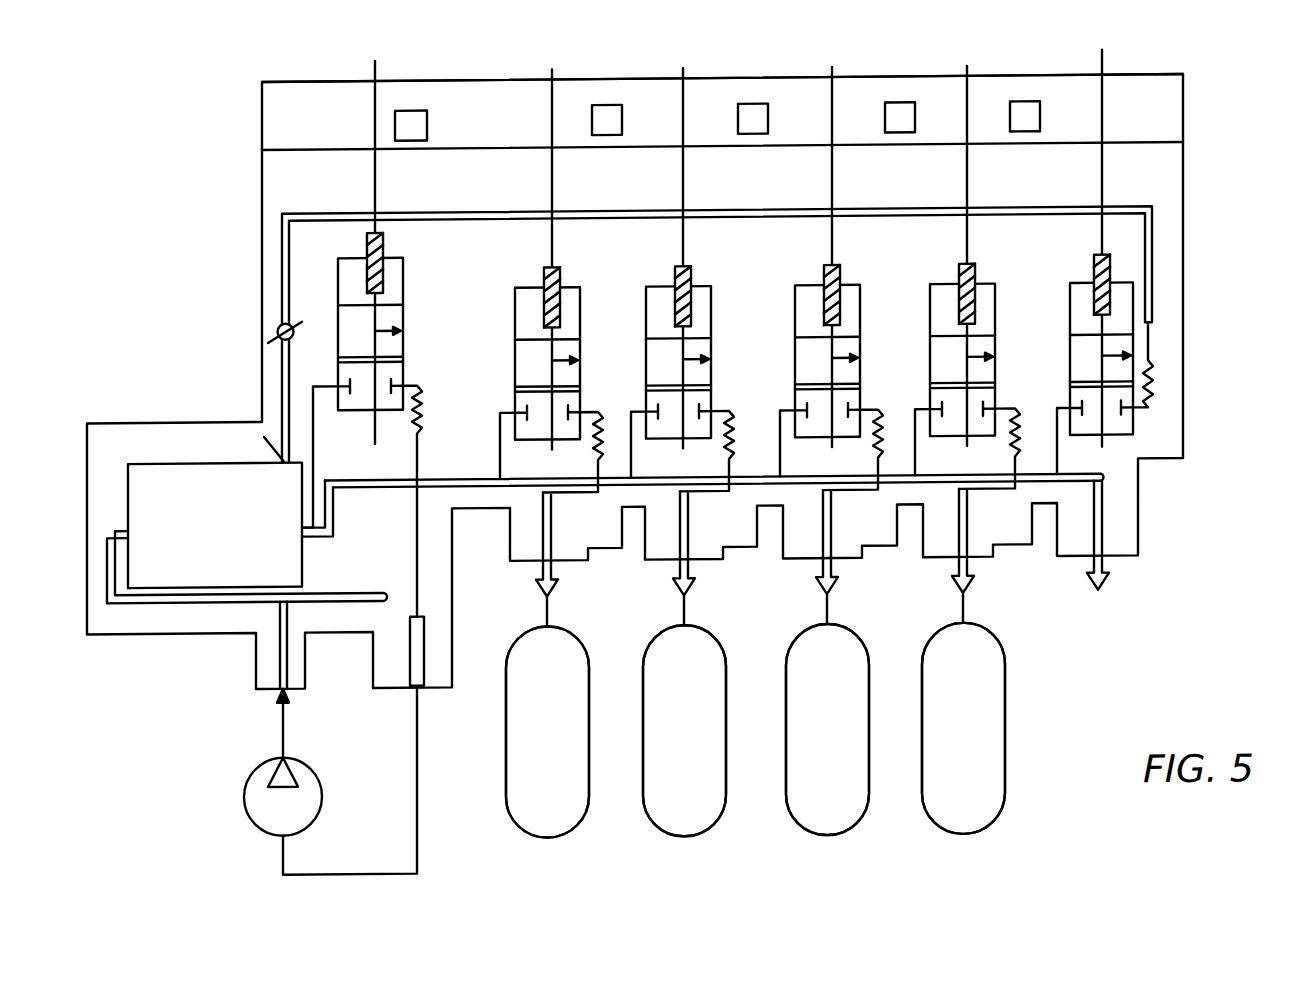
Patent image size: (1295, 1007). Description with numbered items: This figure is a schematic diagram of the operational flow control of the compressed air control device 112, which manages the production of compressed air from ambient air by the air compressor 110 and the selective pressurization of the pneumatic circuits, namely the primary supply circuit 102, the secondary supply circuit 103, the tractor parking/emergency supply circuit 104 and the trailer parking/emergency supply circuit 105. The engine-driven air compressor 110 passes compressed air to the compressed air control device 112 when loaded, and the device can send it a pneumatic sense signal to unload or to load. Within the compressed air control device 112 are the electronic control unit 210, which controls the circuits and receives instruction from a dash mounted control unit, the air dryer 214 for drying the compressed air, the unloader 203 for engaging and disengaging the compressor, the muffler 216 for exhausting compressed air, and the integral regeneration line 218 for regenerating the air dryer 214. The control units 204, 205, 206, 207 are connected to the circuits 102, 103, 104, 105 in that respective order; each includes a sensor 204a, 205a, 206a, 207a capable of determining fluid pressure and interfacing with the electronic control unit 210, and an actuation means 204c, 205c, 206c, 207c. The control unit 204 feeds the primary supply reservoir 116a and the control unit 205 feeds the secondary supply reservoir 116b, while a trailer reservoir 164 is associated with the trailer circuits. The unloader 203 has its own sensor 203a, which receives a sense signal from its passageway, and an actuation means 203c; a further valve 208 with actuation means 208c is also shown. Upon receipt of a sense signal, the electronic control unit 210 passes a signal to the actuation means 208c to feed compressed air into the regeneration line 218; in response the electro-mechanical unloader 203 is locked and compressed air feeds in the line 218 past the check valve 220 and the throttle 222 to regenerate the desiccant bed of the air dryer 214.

The primary supply circuit 102 is at (552, 611).
The secondary supply circuit 103 is at (689, 611).
The tractor parking/emergency supply circuit 104 is at (832, 611).
The trailer parking/emergency supply circuit 105 is at (968, 611).
The air compressor 110 is at (242, 794).
The compressed air control device 112 is at (80, 376).
The primary supply reservoir 116a is at (502, 770).
The secondary supply reservoir 116b is at (638, 782).
The reservoir 164 is at (777, 790).
The unloader 203 is at (375, 68).
The control unit 204 is at (552, 68).
The control unit 205 is at (683, 68).
The control unit 206 is at (832, 68).
The control unit 207 is at (967, 68).
The control valve 208 is at (1102, 64).
The sensor 203a is at (434, 128).
The sensor 204a is at (626, 123).
The sensor 205a is at (772, 123).
The sensor 206a is at (919, 123).
The sensor 207a is at (1044, 123).
The solenoid 203c is at (392, 250).
The actuation means 204c is at (564, 274).
The actuation means 205c is at (700, 272).
The actuation means 206c is at (852, 272).
The actuation means 207c is at (980, 272).
The actuation means 208c is at (1122, 250).
The electronic control unit 210 is at (1192, 112).
The air dryer 214 is at (215, 545).
The muffler 216 is at (428, 697).
The integral regeneration line 218 is at (1002, 208).
The check valve 220 is at (272, 344).
The throttle 222 is at (282, 460).